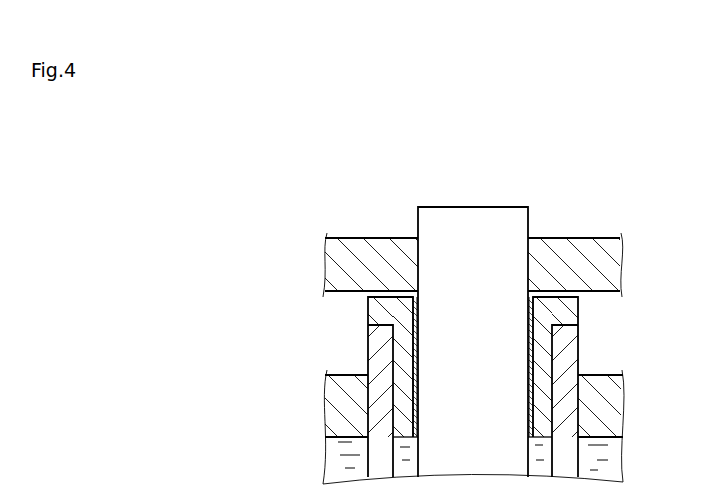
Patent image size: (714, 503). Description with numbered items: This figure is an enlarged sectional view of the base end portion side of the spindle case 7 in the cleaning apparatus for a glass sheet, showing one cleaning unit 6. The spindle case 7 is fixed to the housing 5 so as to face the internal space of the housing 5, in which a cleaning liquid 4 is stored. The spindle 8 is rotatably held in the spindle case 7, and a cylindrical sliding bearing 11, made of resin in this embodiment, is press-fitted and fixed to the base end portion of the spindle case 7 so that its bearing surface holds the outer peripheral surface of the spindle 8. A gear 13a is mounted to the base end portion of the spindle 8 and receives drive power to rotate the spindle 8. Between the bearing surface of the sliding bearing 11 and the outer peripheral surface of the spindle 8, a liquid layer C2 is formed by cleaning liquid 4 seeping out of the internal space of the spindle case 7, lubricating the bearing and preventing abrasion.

The cleaning liquid 4 is at (608, 466).
The housing 5 is at (608, 405).
The cleaning unit 6 is at (454, 195).
The spindle case 7 is at (377, 338).
The spindle 8 is at (481, 236).
The sliding bearing 11 is at (546, 362).
The gear 13a is at (576, 246).
The liquid layer C2 is at (415, 408).